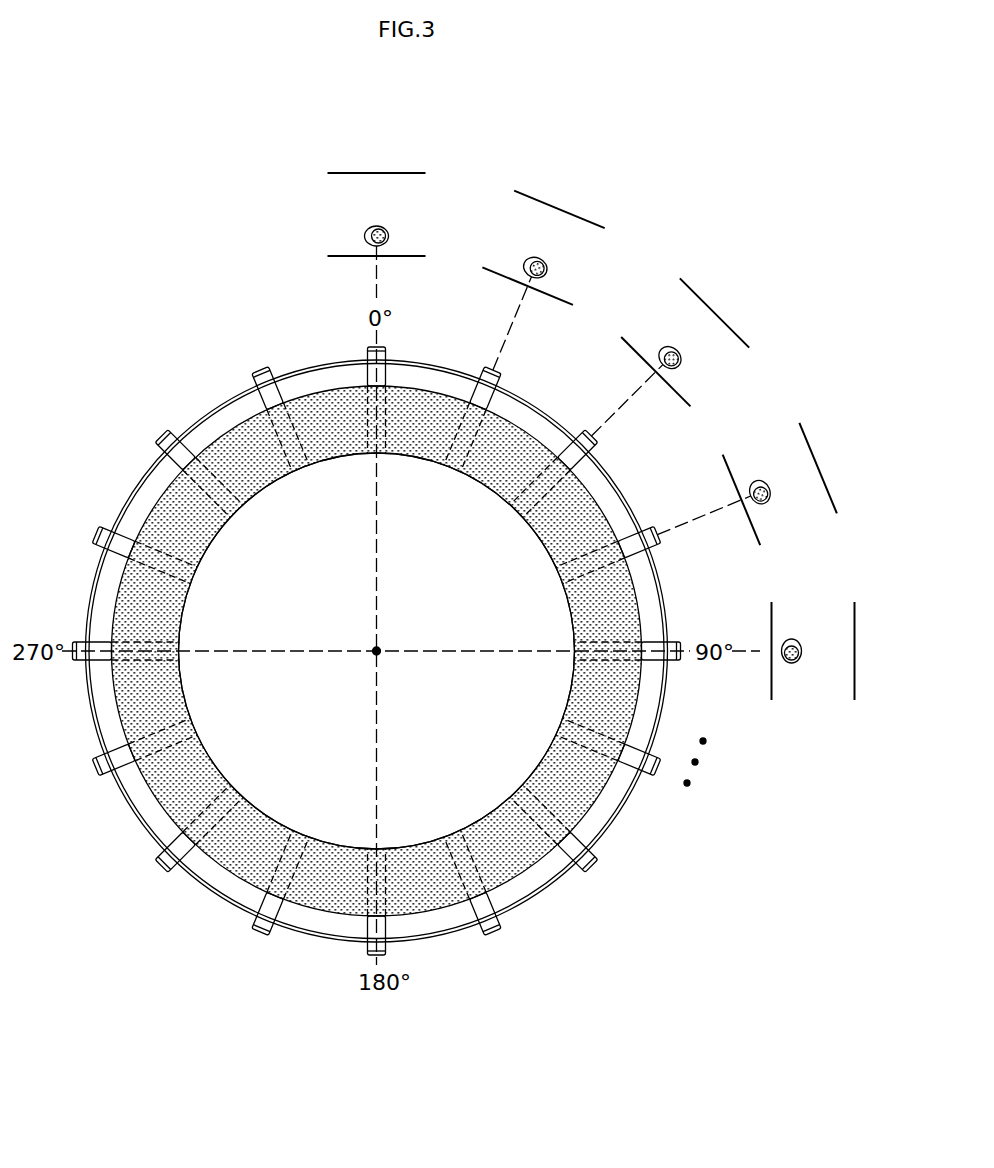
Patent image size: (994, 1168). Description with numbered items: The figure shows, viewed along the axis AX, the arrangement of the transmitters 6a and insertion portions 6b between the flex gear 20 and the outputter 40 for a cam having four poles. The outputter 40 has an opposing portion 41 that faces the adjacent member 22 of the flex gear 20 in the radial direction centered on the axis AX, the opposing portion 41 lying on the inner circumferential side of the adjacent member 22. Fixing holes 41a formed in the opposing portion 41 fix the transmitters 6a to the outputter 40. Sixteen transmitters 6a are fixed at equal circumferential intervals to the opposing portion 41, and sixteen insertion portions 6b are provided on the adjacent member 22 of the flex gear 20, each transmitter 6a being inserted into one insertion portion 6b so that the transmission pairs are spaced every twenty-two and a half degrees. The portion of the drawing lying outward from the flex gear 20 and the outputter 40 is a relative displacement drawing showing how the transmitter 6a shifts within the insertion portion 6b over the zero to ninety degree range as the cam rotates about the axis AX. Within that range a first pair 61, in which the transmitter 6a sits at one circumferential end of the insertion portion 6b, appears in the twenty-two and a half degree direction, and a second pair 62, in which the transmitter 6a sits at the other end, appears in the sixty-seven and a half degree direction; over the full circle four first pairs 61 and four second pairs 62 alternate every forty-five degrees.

The flex gear 20 is at (241, 393).
The adjacent member 22 is at (352, 243).
The outputter 40 is at (266, 489).
The opposing portion 41 is at (207, 437).
The fixing hole 41a is at (303, 463).
The transmitter 6a is at (389, 232).
The insertion portion 6b is at (373, 228).
The first pair 61 is at (602, 245).
The second pair 62 is at (787, 440).
The axis AX is at (372, 655).